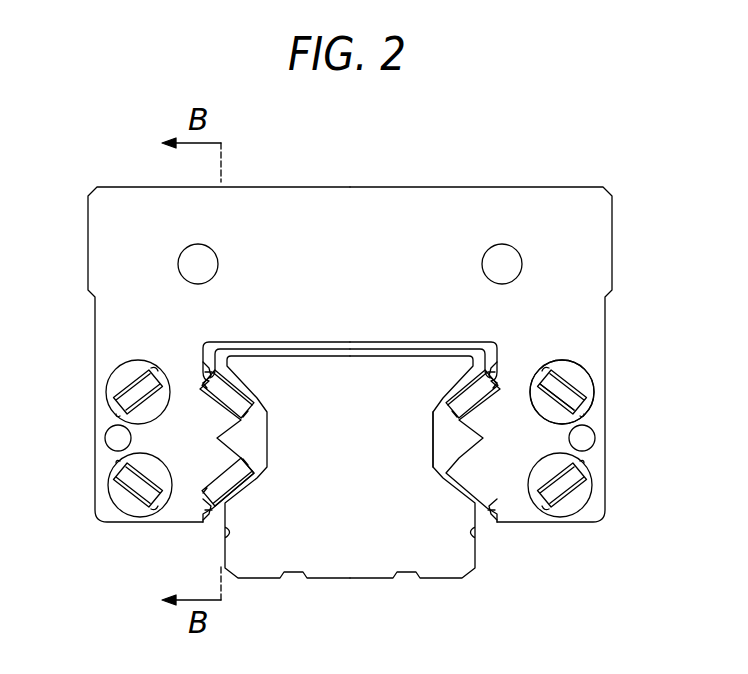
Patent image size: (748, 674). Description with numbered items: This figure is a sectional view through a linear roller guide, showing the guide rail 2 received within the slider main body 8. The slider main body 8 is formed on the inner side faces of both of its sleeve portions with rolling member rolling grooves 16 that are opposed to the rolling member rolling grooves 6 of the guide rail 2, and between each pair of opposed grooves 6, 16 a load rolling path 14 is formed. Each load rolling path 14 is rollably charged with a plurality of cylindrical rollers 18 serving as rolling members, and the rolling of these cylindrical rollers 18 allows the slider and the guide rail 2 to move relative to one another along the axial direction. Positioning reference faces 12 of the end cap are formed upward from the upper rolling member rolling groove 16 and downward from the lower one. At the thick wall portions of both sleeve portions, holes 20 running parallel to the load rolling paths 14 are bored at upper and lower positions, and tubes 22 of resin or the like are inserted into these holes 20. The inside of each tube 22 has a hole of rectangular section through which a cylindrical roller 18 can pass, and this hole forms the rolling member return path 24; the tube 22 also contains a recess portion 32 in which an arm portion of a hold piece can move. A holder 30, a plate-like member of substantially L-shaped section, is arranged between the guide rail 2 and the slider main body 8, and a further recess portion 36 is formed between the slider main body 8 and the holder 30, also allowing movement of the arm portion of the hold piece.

The guide rail 2 is at (348, 542).
The rolling member rolling groove 6 is at (487, 377).
The slider main body 8 is at (611, 236).
The positioning reference face 12 is at (206, 377).
The load rolling path 14 is at (527, 133).
The rolling member rolling groove 16 is at (497, 372).
The cylindrical roller 18 is at (135, 390).
The hole 20 is at (586, 375).
The tube 22 is at (586, 386).
The rolling member return path 24 is at (580, 397).
The holder 30 is at (447, 442).
The recess portion 32 is at (567, 503).
The recess portion 36 is at (472, 505).